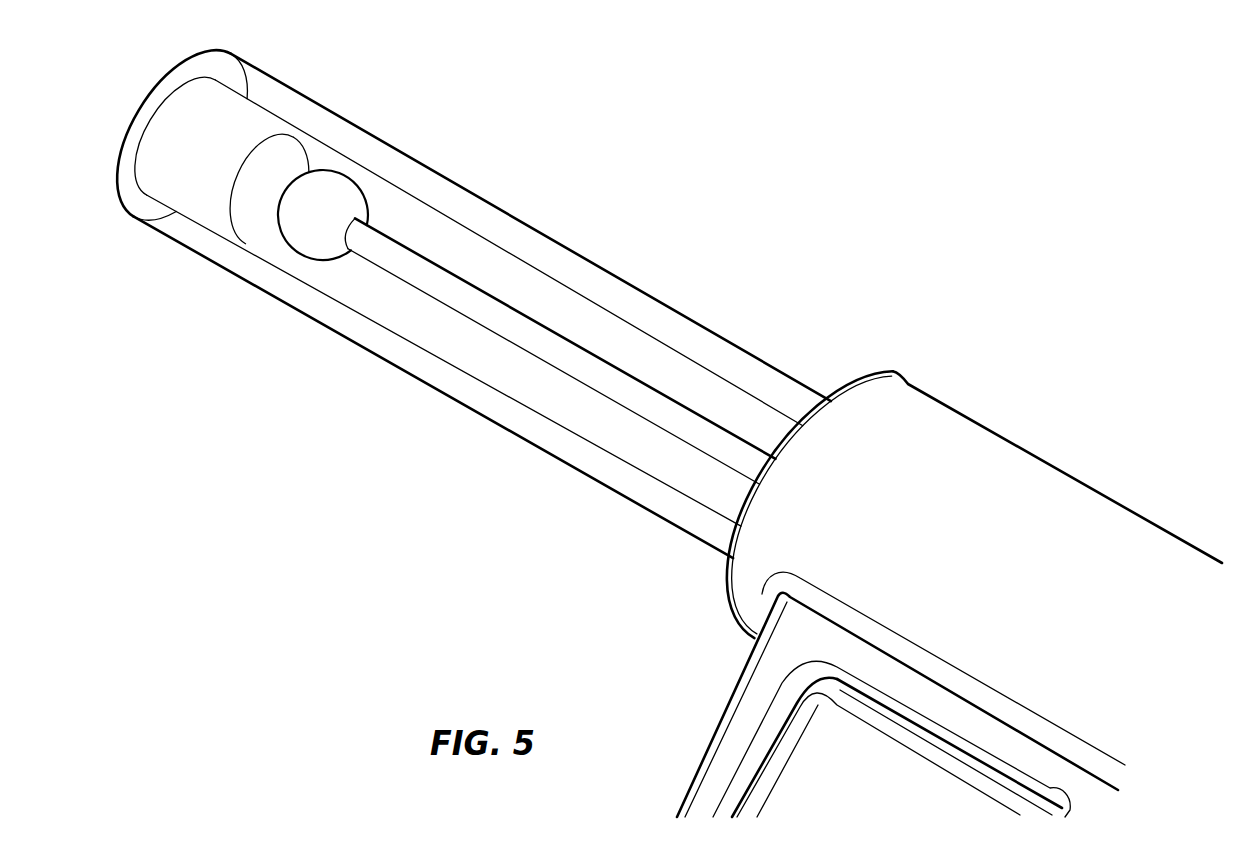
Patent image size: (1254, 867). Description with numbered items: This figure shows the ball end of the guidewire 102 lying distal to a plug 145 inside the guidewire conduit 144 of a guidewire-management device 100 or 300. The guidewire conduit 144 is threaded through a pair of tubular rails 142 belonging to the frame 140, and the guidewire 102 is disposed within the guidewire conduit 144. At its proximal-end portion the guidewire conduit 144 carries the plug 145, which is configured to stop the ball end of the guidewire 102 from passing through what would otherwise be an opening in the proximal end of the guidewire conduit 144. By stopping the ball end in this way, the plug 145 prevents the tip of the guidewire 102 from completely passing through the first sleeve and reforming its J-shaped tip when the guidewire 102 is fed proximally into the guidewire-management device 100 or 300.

The guidewire-management device 100 is at (669, 422).
The guidewire-management device 300 is at (669, 422).
The guidewire 102 is at (485, 315).
The frame 140 is at (960, 378).
The tubular rails 142 is at (1050, 543).
The guidewire conduit 144 is at (592, 268).
The plug 145 is at (250, 125).